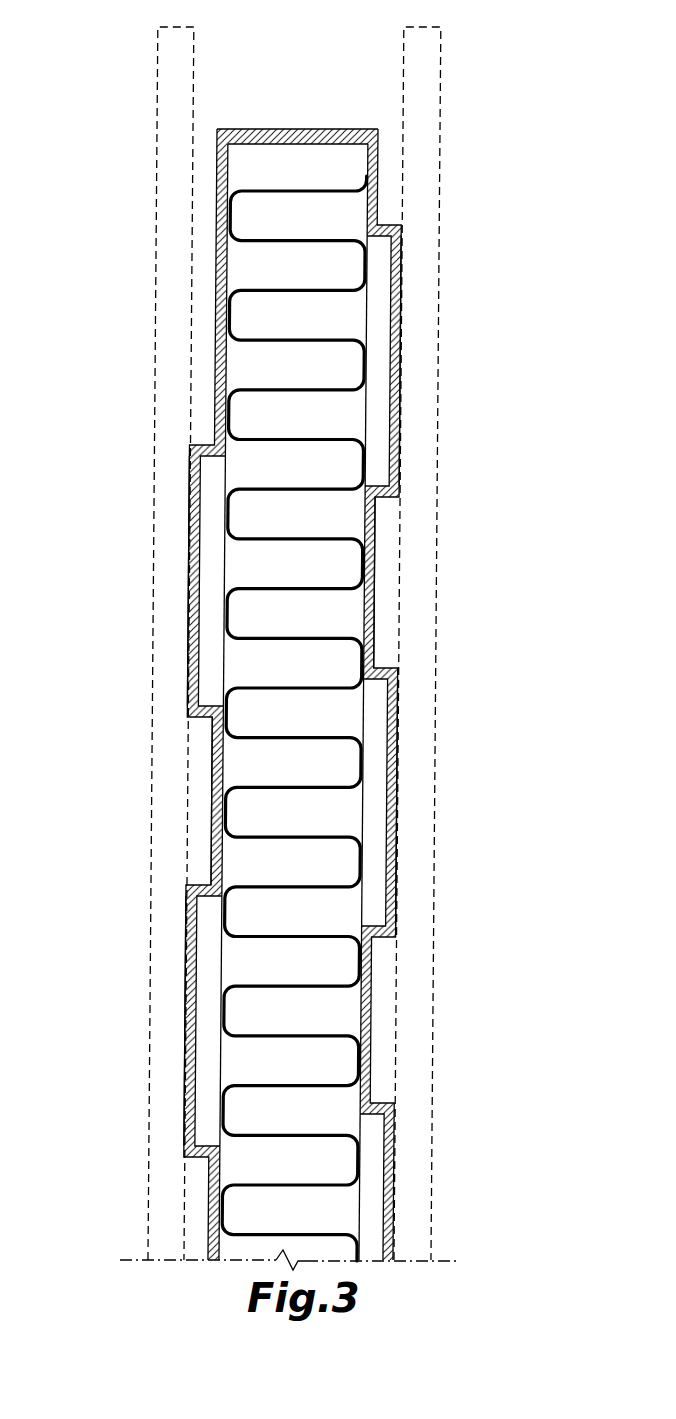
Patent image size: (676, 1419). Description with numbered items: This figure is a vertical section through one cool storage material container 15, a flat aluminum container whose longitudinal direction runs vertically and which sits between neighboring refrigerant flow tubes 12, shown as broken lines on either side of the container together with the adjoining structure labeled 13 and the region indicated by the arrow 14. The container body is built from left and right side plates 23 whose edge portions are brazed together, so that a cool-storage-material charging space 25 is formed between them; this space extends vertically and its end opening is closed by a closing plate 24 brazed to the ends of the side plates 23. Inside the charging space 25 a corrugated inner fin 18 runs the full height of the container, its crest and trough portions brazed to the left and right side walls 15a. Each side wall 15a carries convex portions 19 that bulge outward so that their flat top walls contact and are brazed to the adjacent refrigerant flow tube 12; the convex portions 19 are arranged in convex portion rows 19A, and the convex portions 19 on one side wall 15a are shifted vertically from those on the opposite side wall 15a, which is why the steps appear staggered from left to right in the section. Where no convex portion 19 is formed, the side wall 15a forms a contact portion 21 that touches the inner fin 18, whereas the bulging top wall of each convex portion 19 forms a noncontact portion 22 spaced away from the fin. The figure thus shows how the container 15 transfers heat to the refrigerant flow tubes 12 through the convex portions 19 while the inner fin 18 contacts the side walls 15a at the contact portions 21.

The refrigerant flow tube 12 is at (155, 298).
The header tank 13 is at (155, 247).
The tube insertion hole 14 is at (222, 90).
The cool storage material container 15 is at (312, 123).
The side wall 15a is at (212, 841).
The inner fin 18 is at (273, 640).
The convex portion 19 is at (193, 541).
The convex portion row 19A is at (205, 446).
The contact portion 21 is at (212, 790).
The noncontact portion 22 is at (192, 606).
The side plate 23 is at (211, 1216).
The closing plate 24 is at (277, 130).
The cool-storage-material charging space 25 is at (374, 1024).